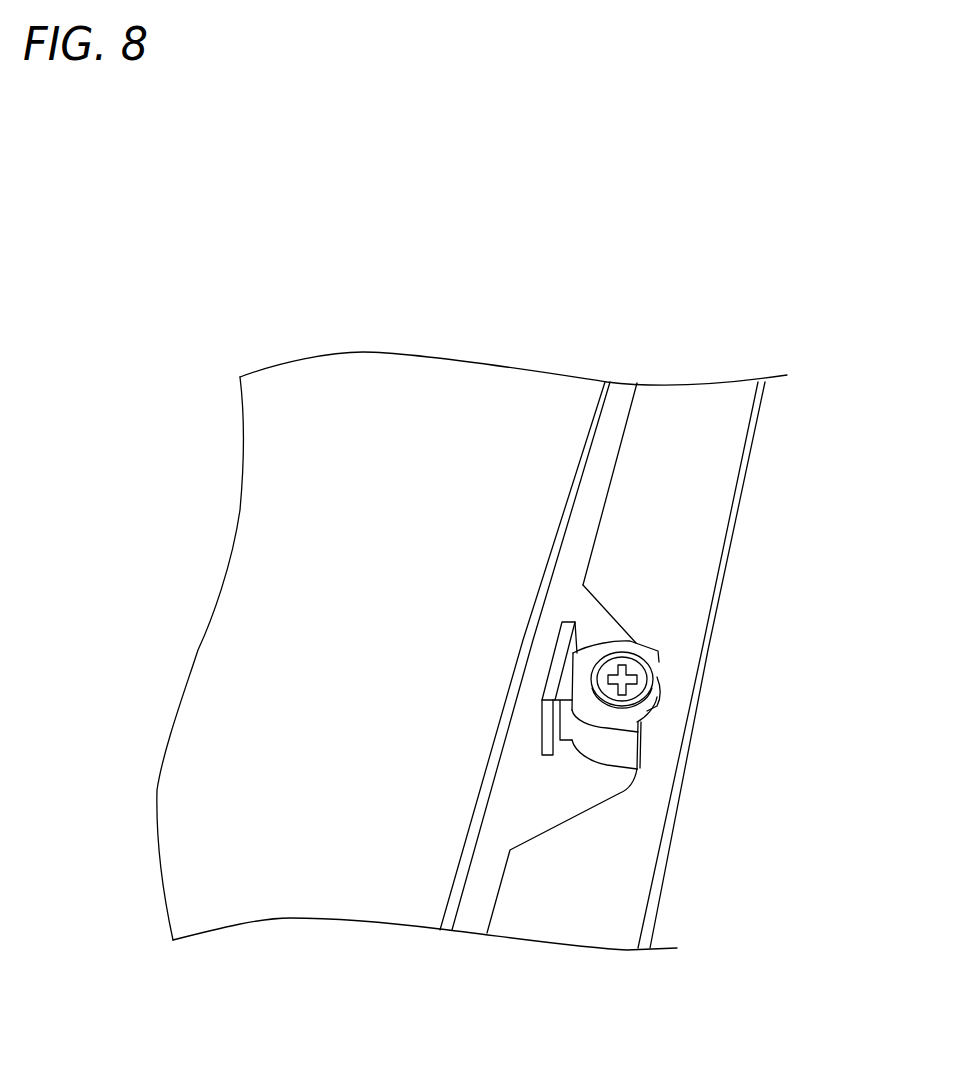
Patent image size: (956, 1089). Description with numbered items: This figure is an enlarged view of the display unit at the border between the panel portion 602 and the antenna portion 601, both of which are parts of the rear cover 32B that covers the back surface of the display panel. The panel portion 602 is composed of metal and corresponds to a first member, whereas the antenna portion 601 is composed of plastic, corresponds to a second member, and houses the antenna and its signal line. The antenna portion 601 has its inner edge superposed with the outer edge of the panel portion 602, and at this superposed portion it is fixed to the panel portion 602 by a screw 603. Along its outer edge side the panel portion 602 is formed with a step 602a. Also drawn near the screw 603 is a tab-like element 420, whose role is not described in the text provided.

The rear cover 32B is at (712, 497).
The antenna portion 601 is at (632, 870).
The panel portion 602 is at (523, 822).
The step 602a is at (558, 559).
The tab 420 is at (567, 640).
The screw 603 is at (640, 688).